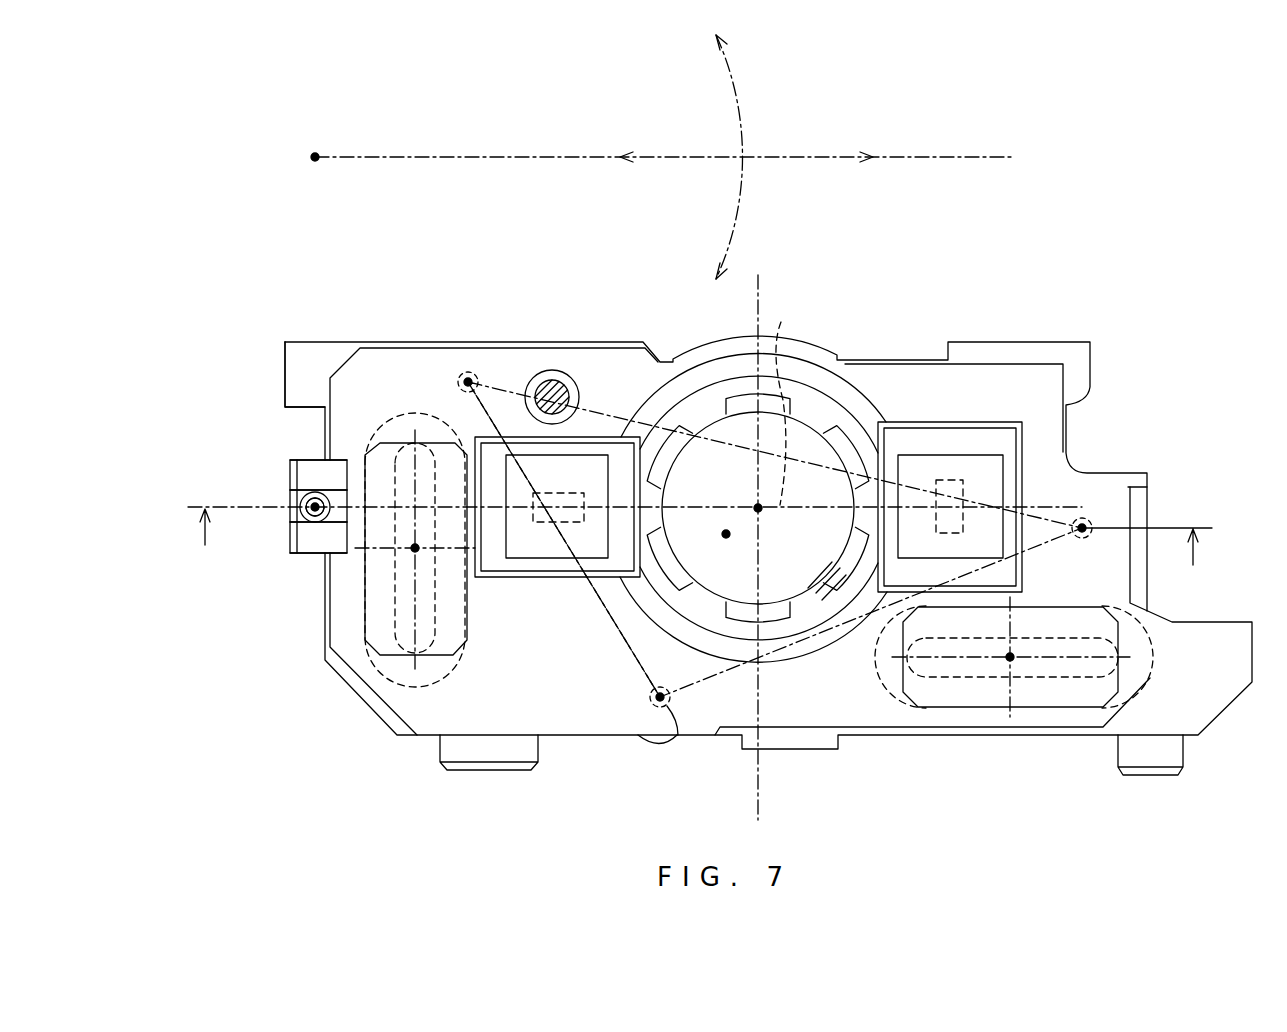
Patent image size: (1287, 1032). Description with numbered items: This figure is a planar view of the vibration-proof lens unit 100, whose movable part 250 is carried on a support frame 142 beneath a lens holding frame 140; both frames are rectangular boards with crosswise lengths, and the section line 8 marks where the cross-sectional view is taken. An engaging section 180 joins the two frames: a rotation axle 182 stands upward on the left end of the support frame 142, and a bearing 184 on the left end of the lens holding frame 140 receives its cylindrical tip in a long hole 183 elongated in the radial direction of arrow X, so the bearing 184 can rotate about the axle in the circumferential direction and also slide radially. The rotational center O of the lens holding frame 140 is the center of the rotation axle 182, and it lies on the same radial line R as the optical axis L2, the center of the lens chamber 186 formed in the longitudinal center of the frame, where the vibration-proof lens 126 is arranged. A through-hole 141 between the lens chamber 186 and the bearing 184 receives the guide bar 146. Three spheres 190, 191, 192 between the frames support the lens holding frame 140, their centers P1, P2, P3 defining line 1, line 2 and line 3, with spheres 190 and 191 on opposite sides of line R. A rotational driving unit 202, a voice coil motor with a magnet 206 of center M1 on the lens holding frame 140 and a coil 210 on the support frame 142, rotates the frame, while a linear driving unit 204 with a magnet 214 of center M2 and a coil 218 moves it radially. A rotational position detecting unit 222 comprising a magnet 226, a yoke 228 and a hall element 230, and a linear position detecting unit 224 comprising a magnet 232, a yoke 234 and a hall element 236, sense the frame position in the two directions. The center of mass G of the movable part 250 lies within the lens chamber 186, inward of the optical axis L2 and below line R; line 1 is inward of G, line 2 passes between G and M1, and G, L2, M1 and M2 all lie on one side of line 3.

The vibration-proof lens unit 100 is at (237, 244).
The line 1 is at (610, 623).
The line 2 is at (790, 643).
The line 3 is at (730, 450).
The line 8- 8 is at (700, 558).
The vibration-proof lens 126 is at (805, 440).
The lens holding frame 140 is at (393, 348).
The through-hole 141 is at (553, 437).
The support frame 142 is at (313, 342).
The guide bar 146 is at (552, 383).
The engaging section 180 is at (195, 600).
The rotation axle 182 is at (310, 508).
The long hole 183 is at (320, 492).
The bearing 184 is at (328, 557).
The lens chamber 186 is at (690, 490).
The sphere 190 is at (503, 437).
The sphere 191 is at (652, 703).
The sphere 192 is at (1078, 518).
The rotational driving unit 202 is at (1065, 714).
The linear driving unit 204 is at (360, 636).
The magnet 206 is at (950, 707).
The coil 210 is at (893, 695).
The magnet 214 is at (460, 656).
The coil 218 is at (368, 683).
The rotational position detecting unit 222 is at (1014, 412).
The linear position detecting unit 224 is at (606, 433).
The magnet 226 is at (1003, 472).
The yoke 228 is at (957, 427).
The hall element 230 is at (963, 522).
The magnet 232 is at (553, 558).
The yoke 234 is at (550, 558).
The hall element 236 is at (540, 522).
The movable part 250 is at (1078, 367).
The center of mass G is at (726, 538).
The optical axis L2 is at (762, 508).
The center of magnet M1 is at (1010, 657).
The center of magnet M2 is at (413, 550).
The rotational center O is at (307, 507).
The center of sphere P1 is at (468, 382).
The center of sphere P2 is at (658, 700).
The center of sphere P3 is at (1083, 528).
The line R is at (953, 157).
The arrow X is at (802, 157).